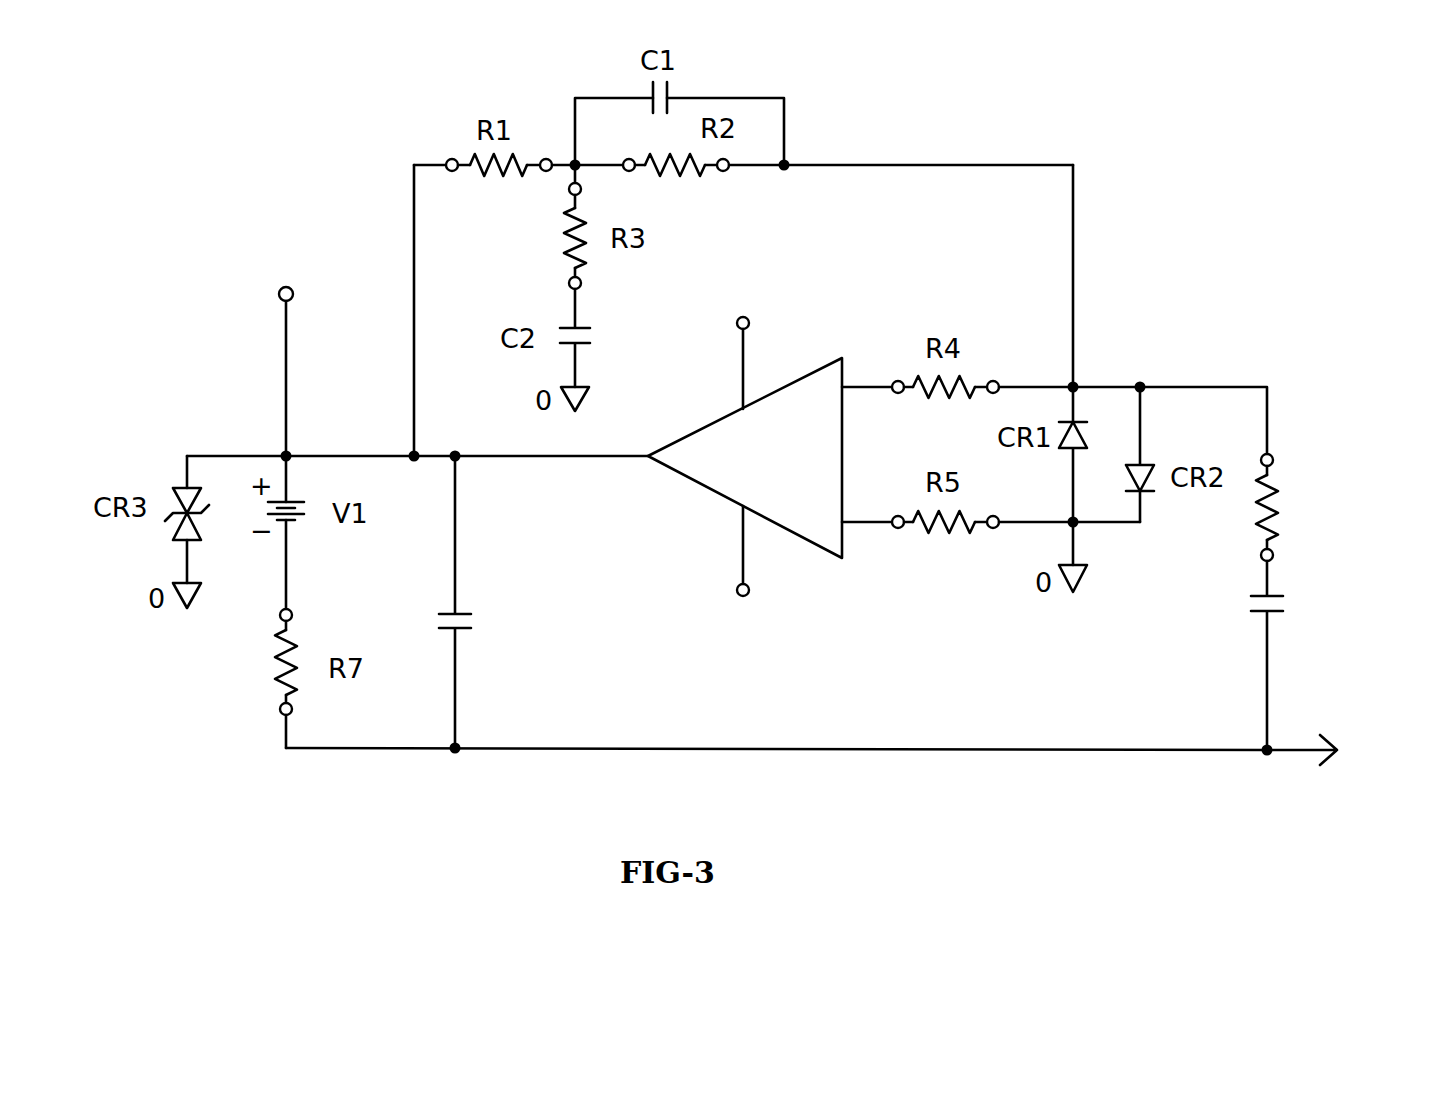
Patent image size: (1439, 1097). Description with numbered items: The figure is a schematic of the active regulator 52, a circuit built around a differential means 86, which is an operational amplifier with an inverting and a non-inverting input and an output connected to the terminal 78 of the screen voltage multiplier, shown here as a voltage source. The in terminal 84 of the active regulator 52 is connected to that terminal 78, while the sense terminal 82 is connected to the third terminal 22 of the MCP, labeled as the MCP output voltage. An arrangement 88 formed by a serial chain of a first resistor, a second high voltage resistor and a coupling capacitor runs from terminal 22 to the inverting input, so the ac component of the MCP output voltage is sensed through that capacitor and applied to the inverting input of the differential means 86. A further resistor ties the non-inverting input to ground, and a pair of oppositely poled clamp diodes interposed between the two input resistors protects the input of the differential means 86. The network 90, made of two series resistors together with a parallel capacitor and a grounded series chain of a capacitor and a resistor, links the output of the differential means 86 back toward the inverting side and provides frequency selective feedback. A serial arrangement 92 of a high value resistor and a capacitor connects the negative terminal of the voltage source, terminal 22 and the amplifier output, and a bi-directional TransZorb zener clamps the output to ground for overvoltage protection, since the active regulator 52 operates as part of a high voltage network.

The in terminal 84 is at (286, 287).
The terminal of the screen voltage multiplier 78 is at (284, 453).
The network 90 is at (827, 146).
The active regulator 52 is at (1112, 160).
The differential means 86 is at (798, 372).
The arrangement 88 is at (1208, 372).
The serial arrangement 92 is at (488, 585).
The sense terminal 82 is at (1130, 750).
The third terminal of the MCP 22 is at (1293, 750).